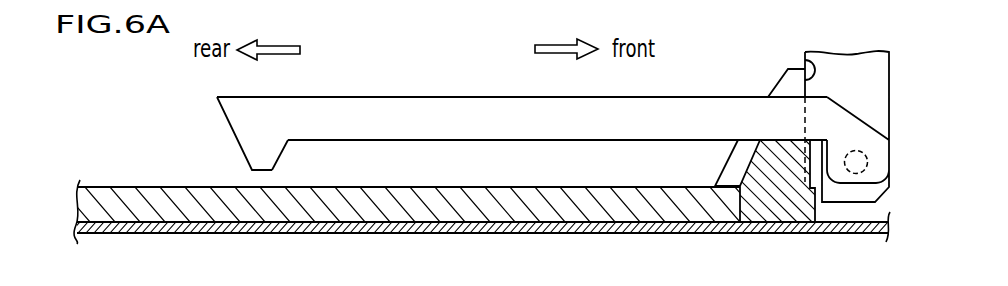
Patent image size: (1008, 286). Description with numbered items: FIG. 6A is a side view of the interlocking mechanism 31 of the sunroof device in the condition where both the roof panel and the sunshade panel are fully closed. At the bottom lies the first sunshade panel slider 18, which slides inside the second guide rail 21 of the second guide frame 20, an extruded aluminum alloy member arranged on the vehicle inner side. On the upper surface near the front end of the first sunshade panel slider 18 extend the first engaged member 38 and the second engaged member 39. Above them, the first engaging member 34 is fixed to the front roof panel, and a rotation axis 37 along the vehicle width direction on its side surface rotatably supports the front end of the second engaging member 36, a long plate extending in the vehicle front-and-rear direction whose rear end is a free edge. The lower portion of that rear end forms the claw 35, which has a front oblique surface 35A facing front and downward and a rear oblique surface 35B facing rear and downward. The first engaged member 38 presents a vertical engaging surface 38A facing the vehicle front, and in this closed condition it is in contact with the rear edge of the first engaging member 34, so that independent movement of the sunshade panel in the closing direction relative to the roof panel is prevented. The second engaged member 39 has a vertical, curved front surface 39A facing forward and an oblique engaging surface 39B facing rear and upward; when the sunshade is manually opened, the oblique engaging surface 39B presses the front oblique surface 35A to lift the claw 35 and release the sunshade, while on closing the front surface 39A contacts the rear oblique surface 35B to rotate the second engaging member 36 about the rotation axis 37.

The first sunshade panel slider 18 is at (462, 195).
The second guide rail 21 is at (483, 228).
The second guide frame 20 is at (479, 227).
The interlocking mechanism 31 is at (429, 87).
The second engaging member 36 is at (502, 108).
The claw 35 is at (263, 148).
The front oblique surface 35A is at (290, 158).
The rear oblique surface 35B is at (243, 158).
The first engaging member 34 is at (852, 77).
The rotation axis 37 is at (849, 176).
The first engaged member 38 is at (794, 90).
The engaging surface 38A is at (806, 63).
The second engaged member 39 is at (771, 172).
The front surface 39A is at (807, 170).
The oblique engaging surface 39B is at (755, 161).